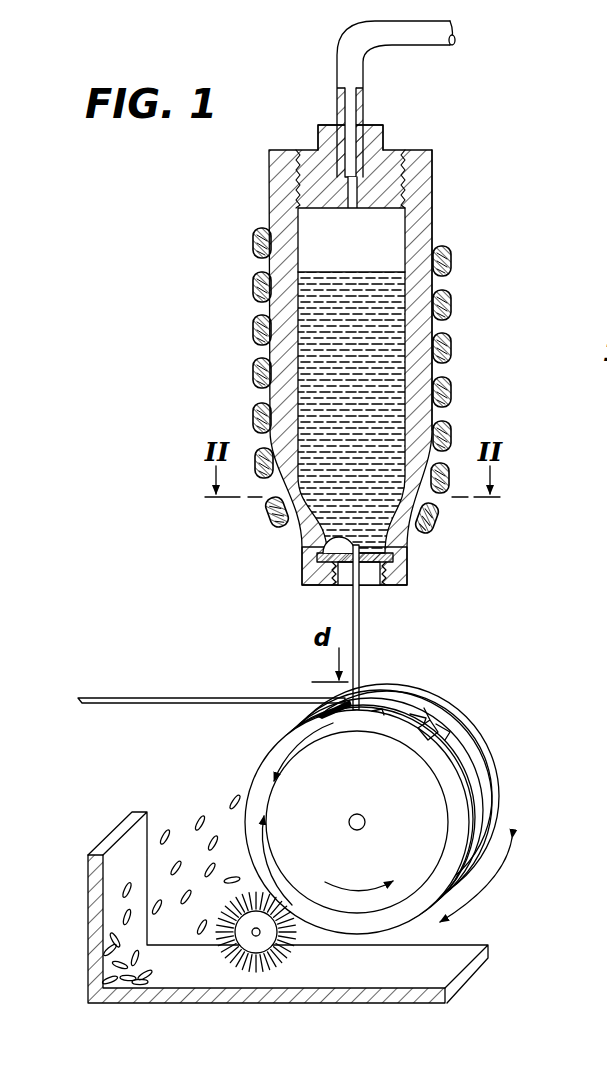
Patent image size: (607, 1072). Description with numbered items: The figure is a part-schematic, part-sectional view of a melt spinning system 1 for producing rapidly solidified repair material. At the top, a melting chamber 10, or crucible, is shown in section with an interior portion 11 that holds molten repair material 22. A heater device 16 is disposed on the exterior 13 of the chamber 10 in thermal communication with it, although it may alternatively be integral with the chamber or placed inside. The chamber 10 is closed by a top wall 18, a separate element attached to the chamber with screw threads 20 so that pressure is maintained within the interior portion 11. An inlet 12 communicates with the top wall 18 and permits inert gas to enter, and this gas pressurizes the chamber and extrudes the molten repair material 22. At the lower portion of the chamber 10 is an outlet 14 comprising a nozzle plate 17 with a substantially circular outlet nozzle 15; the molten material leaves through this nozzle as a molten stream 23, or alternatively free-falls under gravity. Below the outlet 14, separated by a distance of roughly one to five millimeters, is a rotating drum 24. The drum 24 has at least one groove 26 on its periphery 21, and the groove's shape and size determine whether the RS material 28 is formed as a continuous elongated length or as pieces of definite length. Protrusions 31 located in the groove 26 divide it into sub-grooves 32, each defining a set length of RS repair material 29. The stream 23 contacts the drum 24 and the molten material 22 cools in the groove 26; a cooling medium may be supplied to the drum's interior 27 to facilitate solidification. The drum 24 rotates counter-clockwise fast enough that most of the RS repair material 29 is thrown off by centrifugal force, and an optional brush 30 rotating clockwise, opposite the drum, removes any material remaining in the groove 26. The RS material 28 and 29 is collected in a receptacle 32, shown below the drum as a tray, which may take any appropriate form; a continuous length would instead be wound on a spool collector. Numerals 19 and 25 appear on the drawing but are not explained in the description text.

The melt spinning system 1 is at (150, 252).
The melting chamber 10 is at (440, 195).
The interior portion 11 is at (339, 251).
The inlet 12 is at (366, 98).
The exterior 13 is at (433, 213).
The outlet 14 is at (368, 590).
The outlet nozzle 15 is at (337, 540).
The heater device 16 is at (452, 262).
The nozzle plate 17 is at (340, 590).
The top wall 18 is at (425, 147).
The retaining nut 19 is at (393, 573).
The screw threads 20 is at (308, 172).
The periphery 21 is at (476, 880).
The molten repair material 22 is at (339, 369).
The molten stream 23 is at (383, 660).
The rotating drum 24 is at (424, 792).
The roller axle 25 is at (356, 808).
The groove 26 is at (472, 768).
The interior 27 is at (395, 857).
The RS material 28 is at (120, 694).
The RS repair material of set length 29 is at (233, 797).
The brush 30 is at (272, 960).
The protrusion 31 is at (445, 720).
The receptacle 32 is at (83, 900).